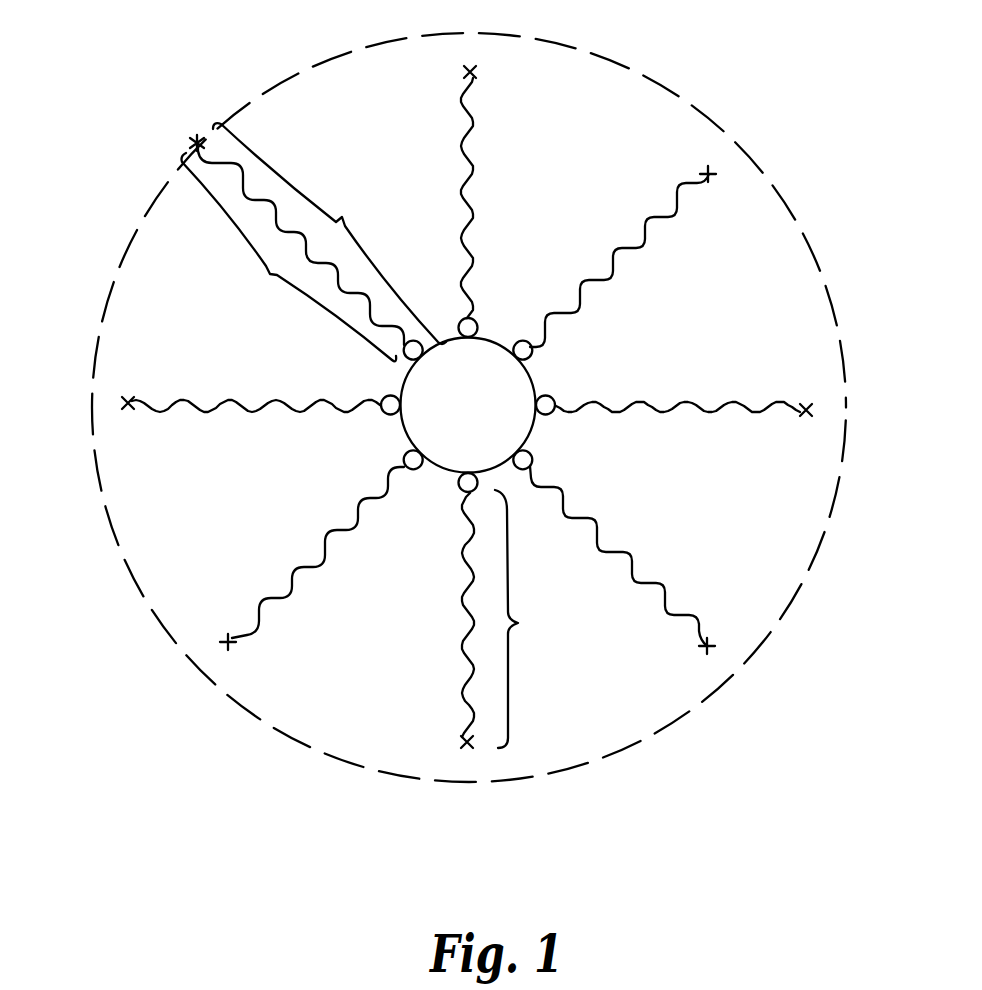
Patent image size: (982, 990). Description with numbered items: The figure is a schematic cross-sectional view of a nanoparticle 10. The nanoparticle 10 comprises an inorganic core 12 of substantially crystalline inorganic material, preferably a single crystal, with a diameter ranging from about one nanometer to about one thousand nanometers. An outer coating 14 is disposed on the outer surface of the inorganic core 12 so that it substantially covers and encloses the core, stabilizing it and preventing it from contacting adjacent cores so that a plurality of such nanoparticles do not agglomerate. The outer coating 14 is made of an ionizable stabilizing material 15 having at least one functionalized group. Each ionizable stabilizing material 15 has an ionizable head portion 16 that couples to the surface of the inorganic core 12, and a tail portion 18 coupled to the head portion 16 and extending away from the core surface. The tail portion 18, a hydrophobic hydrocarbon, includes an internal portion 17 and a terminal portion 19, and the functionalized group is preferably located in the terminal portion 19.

The nanoparticle 10 is at (268, 43).
The inorganic core 12 is at (468, 405).
The outer coating 14 is at (787, 547).
The ionizable stabilizing material 15 is at (322, 234).
The ionizable head portion 16 is at (397, 378).
The internal portion 17 is at (463, 690).
The tail portion 18 is at (368, 450).
The terminal portion 19 is at (128, 400).